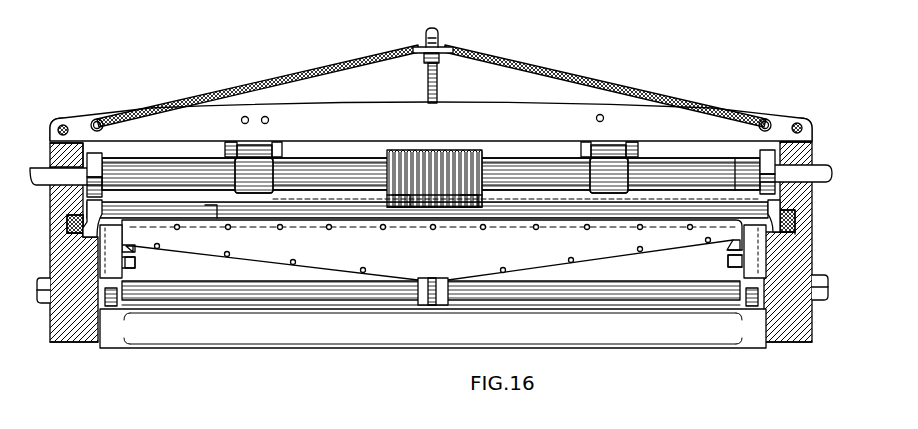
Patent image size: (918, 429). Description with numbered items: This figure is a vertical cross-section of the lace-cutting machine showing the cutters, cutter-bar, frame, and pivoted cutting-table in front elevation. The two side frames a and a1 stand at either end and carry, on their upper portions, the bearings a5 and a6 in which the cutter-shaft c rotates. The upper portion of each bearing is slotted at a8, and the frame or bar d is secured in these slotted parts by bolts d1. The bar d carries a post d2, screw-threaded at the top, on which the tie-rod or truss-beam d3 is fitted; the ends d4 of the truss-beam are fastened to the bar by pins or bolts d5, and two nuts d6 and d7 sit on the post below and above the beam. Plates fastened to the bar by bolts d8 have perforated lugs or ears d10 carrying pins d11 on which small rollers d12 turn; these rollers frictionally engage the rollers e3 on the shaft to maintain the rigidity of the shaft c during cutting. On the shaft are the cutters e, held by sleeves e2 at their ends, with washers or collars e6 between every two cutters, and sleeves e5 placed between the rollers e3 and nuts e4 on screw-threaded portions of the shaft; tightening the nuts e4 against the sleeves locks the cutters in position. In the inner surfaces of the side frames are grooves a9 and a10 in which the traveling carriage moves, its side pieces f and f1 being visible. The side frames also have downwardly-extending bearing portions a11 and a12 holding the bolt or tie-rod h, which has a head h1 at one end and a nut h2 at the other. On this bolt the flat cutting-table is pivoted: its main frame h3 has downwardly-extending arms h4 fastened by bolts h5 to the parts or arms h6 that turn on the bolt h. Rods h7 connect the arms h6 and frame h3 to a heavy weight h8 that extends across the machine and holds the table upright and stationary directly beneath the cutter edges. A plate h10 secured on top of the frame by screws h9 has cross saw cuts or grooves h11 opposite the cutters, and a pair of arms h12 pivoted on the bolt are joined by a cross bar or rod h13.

The side frame a is at (58, 257).
The side frame a1 is at (800, 262).
The bearing a5 is at (49, 150).
The bearing a6 is at (812, 143).
The slot a8 is at (50, 140).
The groove a9 is at (67, 233).
The groove a10 is at (800, 236).
The bearing portion a11 is at (70, 328).
The bearing portion a12 is at (792, 320).
The cutter-shaft c is at (41, 190).
The side piece f is at (796, 217).
The side piece f1 is at (66, 222).
The frame or bar d is at (431, 121).
The bolt d1 is at (64, 125).
The post d2 is at (428, 82).
The tie-rod or truss-beam d3 is at (524, 65).
The end of truss-beam d4 is at (100, 117).
The pin or bolt d5 is at (96, 122).
The nut d6 is at (440, 60).
The nut d7 is at (440, 38).
The bolt d8 is at (265, 116).
The perforated lug or ear d10 is at (229, 144).
The pin d11 is at (290, 150).
The small roller d12 is at (268, 145).
The cutter e is at (464, 152).
The sleeve e2 is at (536, 134).
The roller e3 is at (431, 175).
The nut e4 is at (100, 155).
The sleeve e5 is at (145, 170).
The washer or collar e6 is at (418, 152).
The bolt or tie-rod h is at (220, 284).
The head h1 is at (44, 304).
The nut h2 is at (822, 301).
The main frame of cutting-table h3 is at (608, 219).
The downwardly-extending arm h4 is at (136, 262).
The bolt h5 is at (150, 274).
The part or arm h6 is at (110, 268).
The rod h7 is at (433, 278).
The weight h8 is at (433, 328).
The screw h9 is at (213, 212).
The plate h10 is at (469, 208).
The saw cut or groove h11 is at (424, 207).
The arm h12 is at (740, 187).
The cross bar or rod h13 is at (179, 203).